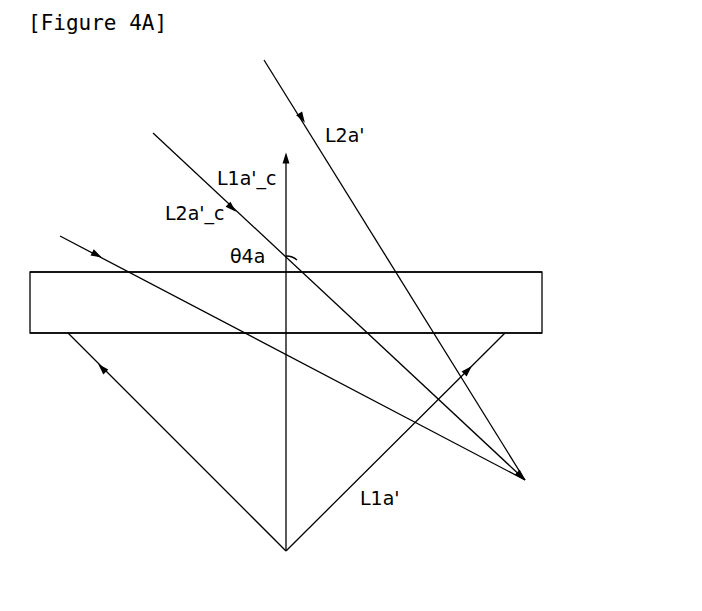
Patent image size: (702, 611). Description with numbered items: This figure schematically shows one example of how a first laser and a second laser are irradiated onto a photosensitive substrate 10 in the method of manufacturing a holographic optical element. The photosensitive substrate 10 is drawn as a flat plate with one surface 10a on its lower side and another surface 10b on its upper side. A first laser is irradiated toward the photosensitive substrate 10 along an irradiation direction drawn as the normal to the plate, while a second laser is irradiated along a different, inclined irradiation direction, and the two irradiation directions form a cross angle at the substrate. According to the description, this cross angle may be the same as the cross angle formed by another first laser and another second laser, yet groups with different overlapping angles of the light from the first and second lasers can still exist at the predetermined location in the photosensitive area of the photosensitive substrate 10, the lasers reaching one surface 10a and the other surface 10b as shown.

The photosensitive substrate 10 is at (557, 303).
The one surface of the photosensitive substrate 10a is at (523, 333).
The another surface of the photosensitive substrate 10b is at (523, 272).